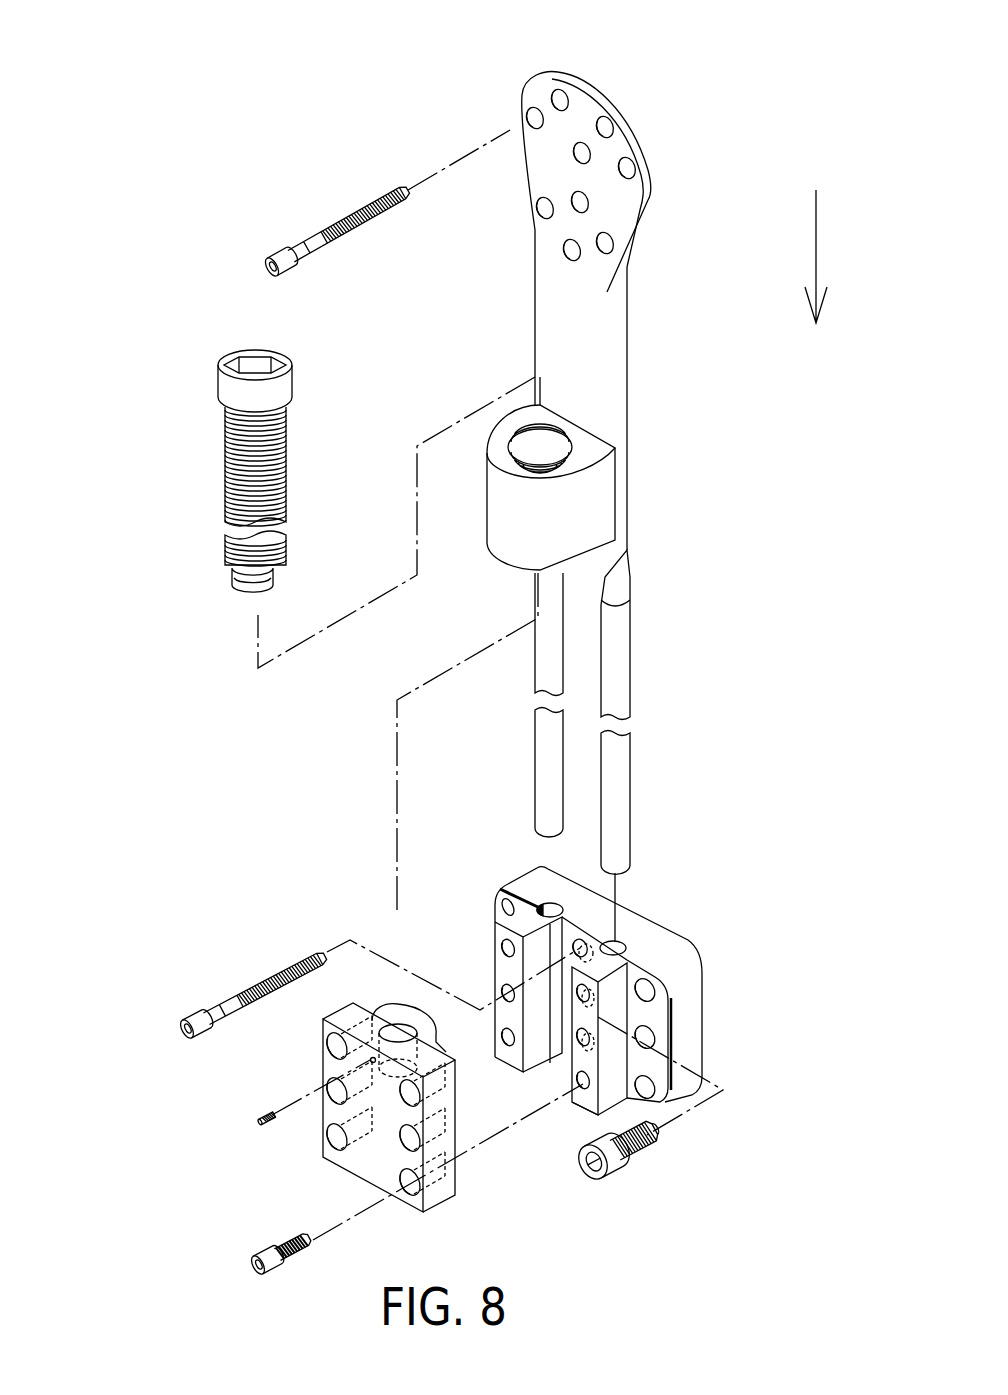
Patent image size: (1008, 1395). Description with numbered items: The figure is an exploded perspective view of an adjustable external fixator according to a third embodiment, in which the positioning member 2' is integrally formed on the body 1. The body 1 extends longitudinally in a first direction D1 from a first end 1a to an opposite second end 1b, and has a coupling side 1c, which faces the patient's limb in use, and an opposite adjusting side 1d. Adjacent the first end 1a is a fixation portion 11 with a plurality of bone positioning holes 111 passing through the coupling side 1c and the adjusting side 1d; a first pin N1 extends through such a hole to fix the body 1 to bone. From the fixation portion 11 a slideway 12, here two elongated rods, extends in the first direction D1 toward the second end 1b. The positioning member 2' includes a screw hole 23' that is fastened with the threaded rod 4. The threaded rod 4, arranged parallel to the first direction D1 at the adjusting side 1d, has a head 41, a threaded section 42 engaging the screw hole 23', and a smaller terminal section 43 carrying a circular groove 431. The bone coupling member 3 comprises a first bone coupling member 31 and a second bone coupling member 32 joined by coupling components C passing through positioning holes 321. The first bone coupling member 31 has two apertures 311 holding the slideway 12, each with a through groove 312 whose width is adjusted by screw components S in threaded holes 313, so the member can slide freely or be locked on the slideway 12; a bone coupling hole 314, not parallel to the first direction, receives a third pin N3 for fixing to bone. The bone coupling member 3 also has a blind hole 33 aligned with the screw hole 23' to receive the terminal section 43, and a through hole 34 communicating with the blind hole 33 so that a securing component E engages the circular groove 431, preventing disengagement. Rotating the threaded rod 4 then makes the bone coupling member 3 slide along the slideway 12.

The body 1 is at (595, 488).
The first end 1a is at (578, 73).
The second end 1b is at (625, 881).
The coupling side 1c is at (635, 248).
The adjusting side 1d is at (552, 292).
The fixation portion 11 is at (626, 164).
The bone positioning holes 111 is at (608, 127).
The slideway 12 is at (622, 672).
The positioning member 2' is at (595, 474).
The screw hole 23' is at (606, 426).
The bone coupling member 3 is at (536, 1039).
The first bone coupling member 31 is at (621, 1001).
The apertures 311 is at (622, 945).
The through groove 312 is at (690, 1036).
The threaded holes 313 is at (648, 1105).
The bone coupling hole 314 is at (576, 943).
The second bone coupling member 32 is at (356, 1091).
The positioning holes 321 is at (332, 1138).
The blind hole 33 is at (398, 1027).
The through hole 34 is at (370, 1061).
The threaded rod 4 is at (193, 464).
The head 41 is at (237, 355).
The threaded section 42 is at (228, 493).
The terminal section 43 is at (200, 598).
The circular groove 431 is at (235, 585).
The coupling components C is at (262, 1258).
The securing component E is at (260, 1118).
The screw components S is at (615, 1172).
The first pin N1 is at (295, 250).
The third pin N3 is at (208, 1020).
The first direction D1 is at (823, 280).